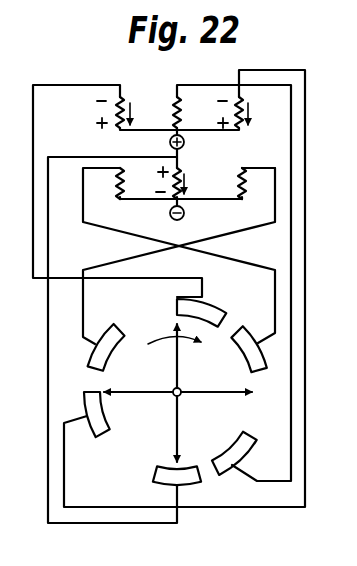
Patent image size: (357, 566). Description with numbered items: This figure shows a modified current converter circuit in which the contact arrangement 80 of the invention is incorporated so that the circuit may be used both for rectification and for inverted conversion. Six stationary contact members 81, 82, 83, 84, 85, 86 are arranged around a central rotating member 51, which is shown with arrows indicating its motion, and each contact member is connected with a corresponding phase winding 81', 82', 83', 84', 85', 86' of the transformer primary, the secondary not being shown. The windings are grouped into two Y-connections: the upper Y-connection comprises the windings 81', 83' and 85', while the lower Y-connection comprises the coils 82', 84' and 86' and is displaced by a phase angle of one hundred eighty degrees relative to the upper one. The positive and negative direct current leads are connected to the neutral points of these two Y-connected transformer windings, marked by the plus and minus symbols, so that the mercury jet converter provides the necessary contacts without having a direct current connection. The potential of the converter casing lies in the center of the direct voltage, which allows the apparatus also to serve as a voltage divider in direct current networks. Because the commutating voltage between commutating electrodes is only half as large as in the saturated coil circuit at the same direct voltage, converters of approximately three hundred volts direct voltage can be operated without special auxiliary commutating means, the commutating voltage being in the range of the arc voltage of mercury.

The contact arrangement 80 is at (157, 310).
The control shaft / center node with direction arrows 51 is at (209, 431).
The stationary contact member 81 is at (212, 300).
The stationary contact member 82 is at (106, 337).
The stationary contact member 83 is at (234, 467).
The stationary contact member 84 is at (251, 337).
The stationary contact member 85 is at (82, 409).
The stationary contact member 86 is at (160, 485).
The phase winding 81' is at (131, 108).
The phase winding 83' is at (194, 108).
The phase winding 85' is at (253, 108).
The phase winding 84' is at (142, 183).
The phase winding 86' is at (200, 183).
The phase winding 82' is at (257, 183).